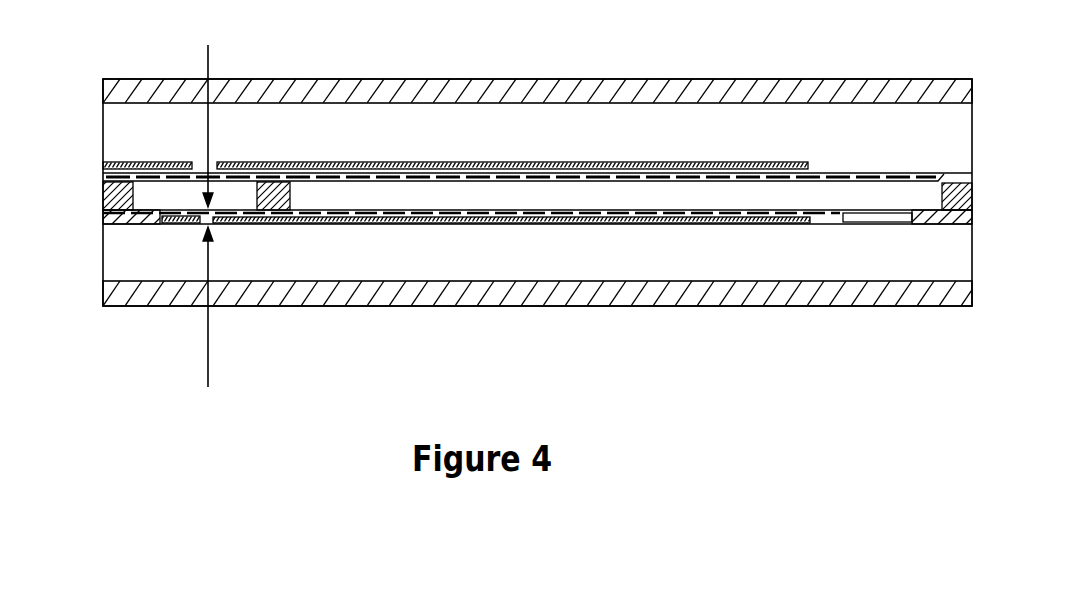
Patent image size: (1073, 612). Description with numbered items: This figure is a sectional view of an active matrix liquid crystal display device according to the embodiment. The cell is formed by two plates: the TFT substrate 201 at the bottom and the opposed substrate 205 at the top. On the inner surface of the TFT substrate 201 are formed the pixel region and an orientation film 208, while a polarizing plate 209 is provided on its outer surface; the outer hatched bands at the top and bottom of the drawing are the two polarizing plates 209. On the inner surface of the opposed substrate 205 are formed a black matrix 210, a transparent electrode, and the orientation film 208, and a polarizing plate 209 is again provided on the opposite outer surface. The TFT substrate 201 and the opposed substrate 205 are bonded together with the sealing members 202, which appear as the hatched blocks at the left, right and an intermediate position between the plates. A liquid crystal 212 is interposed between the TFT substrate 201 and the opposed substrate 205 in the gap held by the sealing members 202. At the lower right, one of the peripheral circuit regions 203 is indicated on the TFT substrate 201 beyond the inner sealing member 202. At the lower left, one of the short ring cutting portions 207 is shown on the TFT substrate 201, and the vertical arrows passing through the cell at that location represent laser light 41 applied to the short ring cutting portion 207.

The laser light 41 is at (208, 225).
The TFT substrate 201 is at (588, 269).
The sealing members 202 is at (103, 193).
The peripheral circuit region 203 is at (863, 223).
The opposed substrate 205 is at (613, 142).
The short ring cutting portion 207 is at (203, 223).
The orientation film 208 is at (860, 180).
The polarizing plate 209 is at (725, 92).
The black matrix 210 is at (183, 160).
The liquid crystal 212 is at (463, 209).